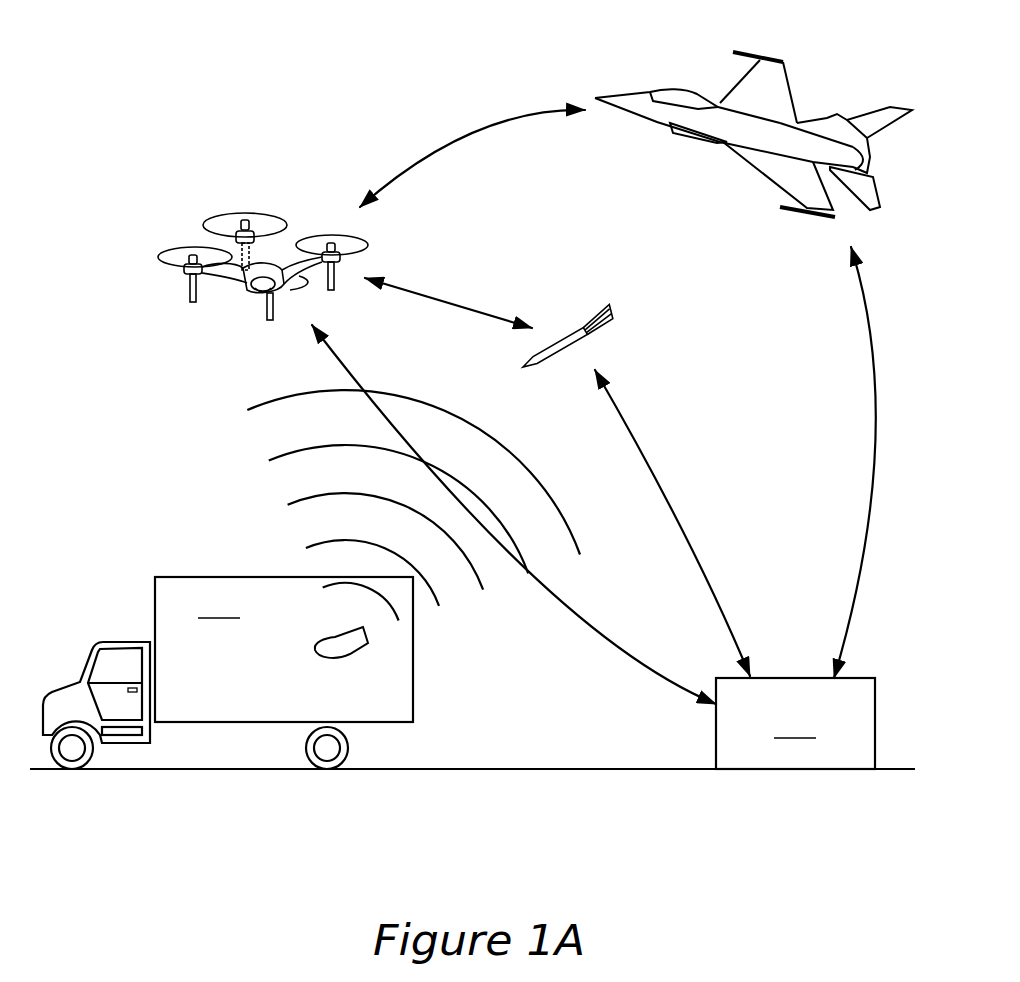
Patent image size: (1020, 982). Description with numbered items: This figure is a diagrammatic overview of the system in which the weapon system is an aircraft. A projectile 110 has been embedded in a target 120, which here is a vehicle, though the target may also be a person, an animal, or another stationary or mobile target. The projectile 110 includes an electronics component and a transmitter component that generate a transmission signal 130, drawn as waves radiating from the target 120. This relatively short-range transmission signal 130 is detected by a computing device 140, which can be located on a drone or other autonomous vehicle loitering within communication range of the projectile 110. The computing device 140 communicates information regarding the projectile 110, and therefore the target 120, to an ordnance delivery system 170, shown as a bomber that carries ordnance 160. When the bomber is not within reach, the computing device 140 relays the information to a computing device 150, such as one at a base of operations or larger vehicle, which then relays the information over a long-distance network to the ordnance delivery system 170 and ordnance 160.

The projectile 110 is at (352, 657).
The target 120 is at (228, 673).
The transmission signal 130 is at (235, 471).
The computing device 140 is at (232, 192).
The computing device 150 is at (795, 723).
The ordnance 160 is at (572, 327).
The ordnance delivery system 170 is at (670, 90).